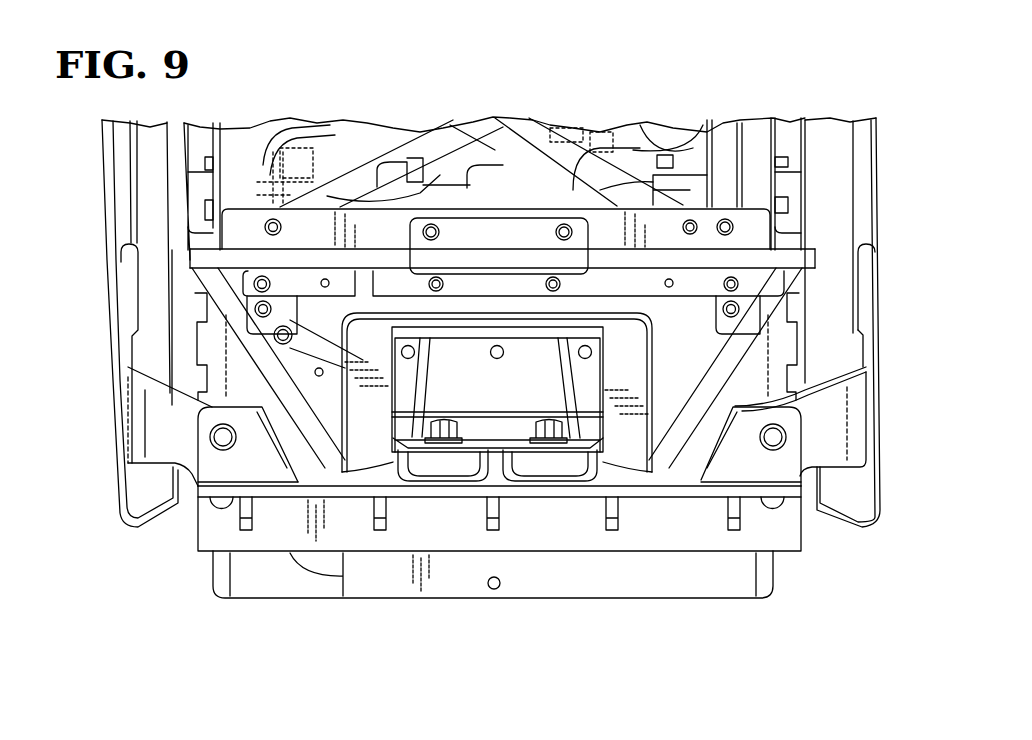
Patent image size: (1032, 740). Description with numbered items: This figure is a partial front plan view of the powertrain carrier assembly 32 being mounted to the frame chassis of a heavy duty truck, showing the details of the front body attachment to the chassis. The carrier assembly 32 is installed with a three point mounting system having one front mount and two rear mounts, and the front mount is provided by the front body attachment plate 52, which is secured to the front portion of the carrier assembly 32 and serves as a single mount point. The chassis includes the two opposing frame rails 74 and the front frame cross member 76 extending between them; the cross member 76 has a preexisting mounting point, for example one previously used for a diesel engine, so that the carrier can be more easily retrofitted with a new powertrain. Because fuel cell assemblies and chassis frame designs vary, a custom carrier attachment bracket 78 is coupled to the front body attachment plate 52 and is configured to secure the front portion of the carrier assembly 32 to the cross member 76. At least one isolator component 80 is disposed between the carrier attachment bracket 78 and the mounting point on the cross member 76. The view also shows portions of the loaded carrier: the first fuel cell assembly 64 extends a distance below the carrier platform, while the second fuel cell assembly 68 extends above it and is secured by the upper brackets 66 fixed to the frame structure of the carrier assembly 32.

The powertrain carrier assembly 32 is at (203, 261).
The front body attachment plate 52 is at (364, 432).
The first fuel cell assembly 64 is at (731, 619).
The upper brackets 66 is at (534, 253).
The second fuel cell assembly 68 is at (731, 112).
The frame rails 74 is at (118, 163).
The front frame cross member 76 is at (746, 470).
The carrier attachment bracket 78 is at (507, 387).
The isolator component 80 is at (444, 467).